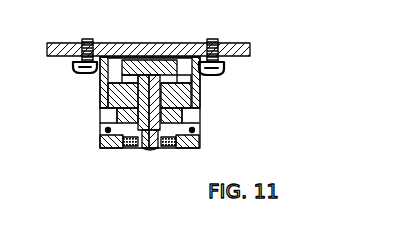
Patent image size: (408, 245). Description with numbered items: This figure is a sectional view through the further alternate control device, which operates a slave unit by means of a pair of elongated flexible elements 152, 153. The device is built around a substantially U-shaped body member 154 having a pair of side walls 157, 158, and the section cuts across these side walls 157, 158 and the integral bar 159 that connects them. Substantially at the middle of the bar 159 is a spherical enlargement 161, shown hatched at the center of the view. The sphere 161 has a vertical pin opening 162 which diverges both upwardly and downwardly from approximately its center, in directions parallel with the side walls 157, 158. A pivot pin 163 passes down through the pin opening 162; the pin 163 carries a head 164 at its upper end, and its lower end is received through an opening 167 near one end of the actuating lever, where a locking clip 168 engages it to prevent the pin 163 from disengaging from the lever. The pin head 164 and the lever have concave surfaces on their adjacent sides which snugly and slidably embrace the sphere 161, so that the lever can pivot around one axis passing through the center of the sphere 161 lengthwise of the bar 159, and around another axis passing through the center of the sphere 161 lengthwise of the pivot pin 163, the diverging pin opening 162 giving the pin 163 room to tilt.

The elongated flexible element 152 is at (106, 130).
The elongated flexible element 153 is at (195, 129).
The body member 154 is at (99, 84).
The side wall 157 is at (100, 113).
The side wall 158 is at (181, 107).
The integral bar 159 is at (181, 89).
The spherical enlargement 161 is at (100, 95).
The pin opening 162 is at (146, 73).
The pivot pin 163 is at (152, 150).
The head 164 is at (152, 73).
The opening 167 is at (125, 143).
The locking clip 168 is at (166, 146).